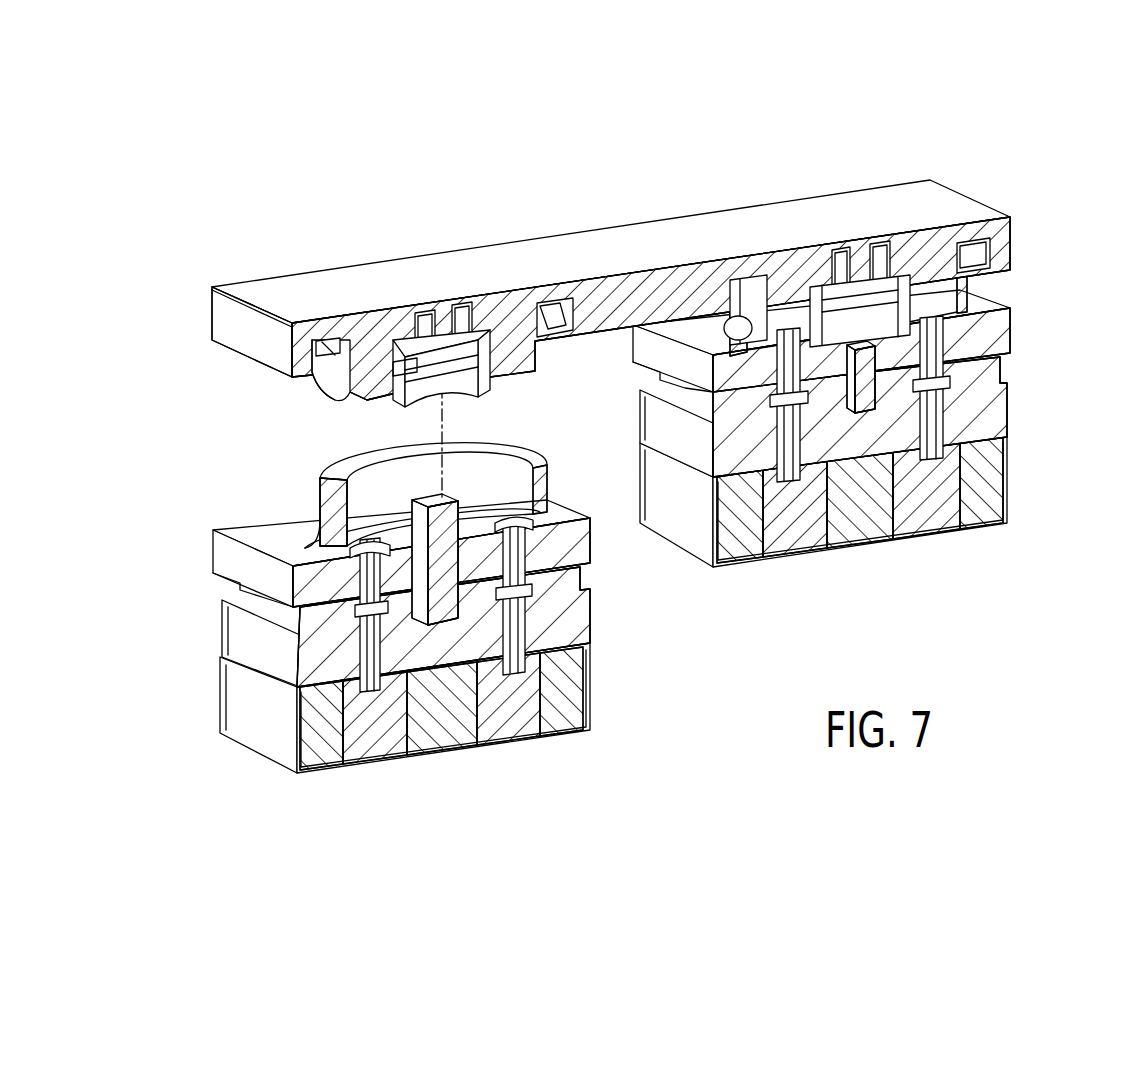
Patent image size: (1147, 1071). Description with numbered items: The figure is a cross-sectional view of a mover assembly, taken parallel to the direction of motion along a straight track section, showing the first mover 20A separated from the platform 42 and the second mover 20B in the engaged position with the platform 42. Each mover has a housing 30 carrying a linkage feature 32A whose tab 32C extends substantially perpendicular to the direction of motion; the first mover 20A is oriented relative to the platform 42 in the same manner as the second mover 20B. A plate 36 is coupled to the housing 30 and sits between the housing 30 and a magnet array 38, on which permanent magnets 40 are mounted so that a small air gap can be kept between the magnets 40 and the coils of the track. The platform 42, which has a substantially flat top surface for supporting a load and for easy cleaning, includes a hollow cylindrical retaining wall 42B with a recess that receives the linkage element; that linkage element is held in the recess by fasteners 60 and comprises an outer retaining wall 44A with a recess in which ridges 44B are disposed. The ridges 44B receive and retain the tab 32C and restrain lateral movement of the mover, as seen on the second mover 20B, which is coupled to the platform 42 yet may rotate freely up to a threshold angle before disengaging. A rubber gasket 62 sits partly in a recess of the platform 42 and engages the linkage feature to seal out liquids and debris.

The first mover 20A is at (198, 503).
The second mover 20B is at (1055, 452).
The housing 30 is at (215, 550).
The linkage feature 32A is at (320, 495).
The tab 32C is at (452, 523).
The plate 36 is at (222, 627).
The magnet array 38 is at (574, 618).
The magnets 40 is at (440, 732).
The platform 42 is at (598, 283).
The retaining wall 42B is at (345, 396).
The outer retaining wall 44A is at (490, 387).
The ridges 44B is at (417, 377).
The fasteners 60 is at (420, 318).
The rubber gasket 62 is at (320, 368).